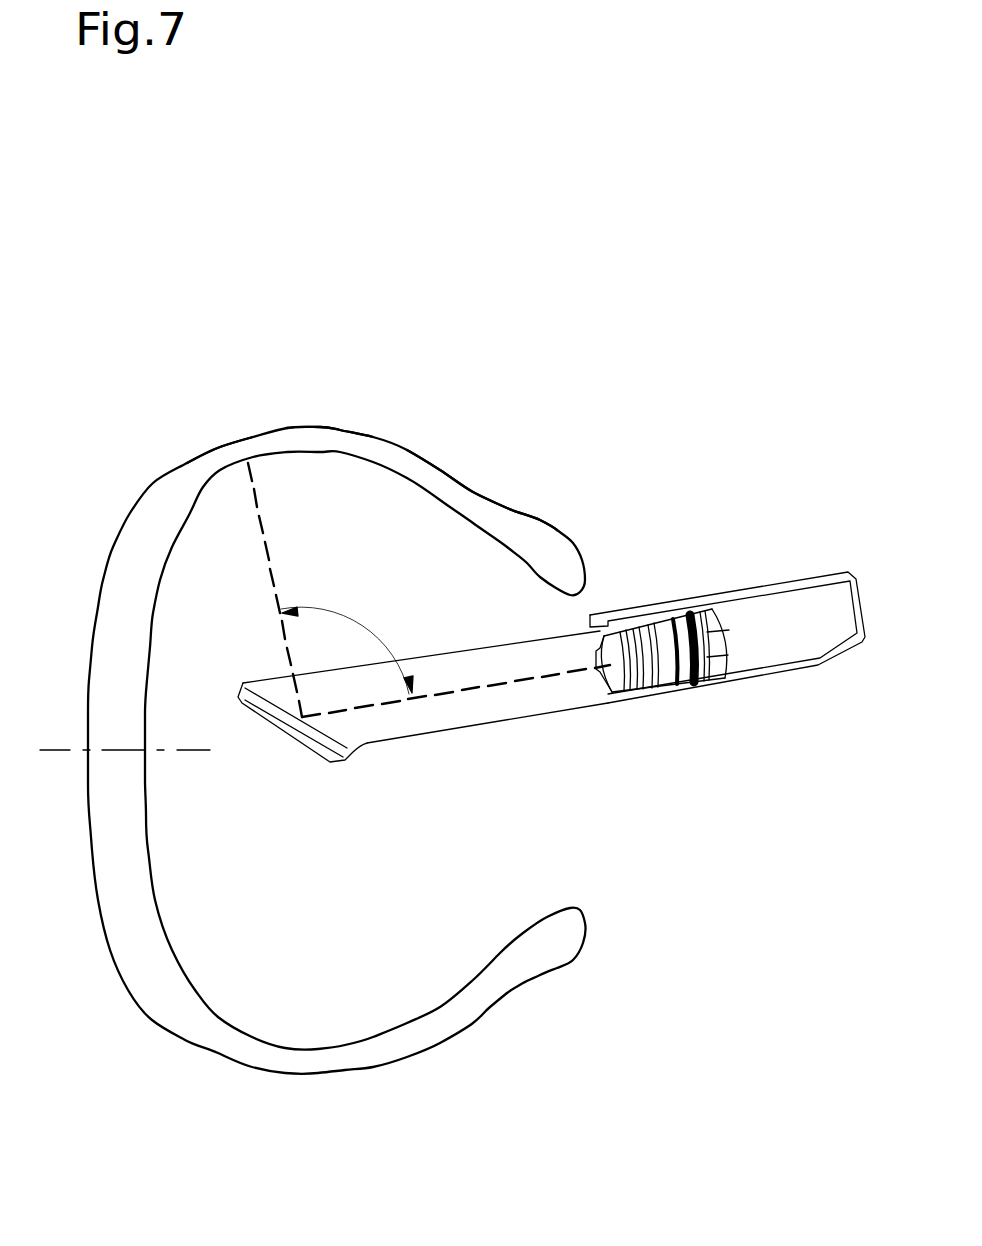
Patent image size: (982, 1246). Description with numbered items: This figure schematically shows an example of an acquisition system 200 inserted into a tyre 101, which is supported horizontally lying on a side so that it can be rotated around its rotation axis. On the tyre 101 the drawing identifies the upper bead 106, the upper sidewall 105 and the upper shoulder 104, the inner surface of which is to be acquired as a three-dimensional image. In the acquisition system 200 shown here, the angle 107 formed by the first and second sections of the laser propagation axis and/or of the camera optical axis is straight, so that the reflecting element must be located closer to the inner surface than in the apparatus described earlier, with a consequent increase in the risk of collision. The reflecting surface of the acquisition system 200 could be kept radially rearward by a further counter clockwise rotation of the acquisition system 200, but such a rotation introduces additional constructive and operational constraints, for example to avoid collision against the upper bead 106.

The tyre 101 is at (70, 600).
The upper shoulder 104 is at (209, 418).
The upper sidewall 105 is at (398, 412).
The upper bead 106 is at (532, 484).
The angle 107 is at (369, 632).
The acquisition system 200 is at (699, 762).